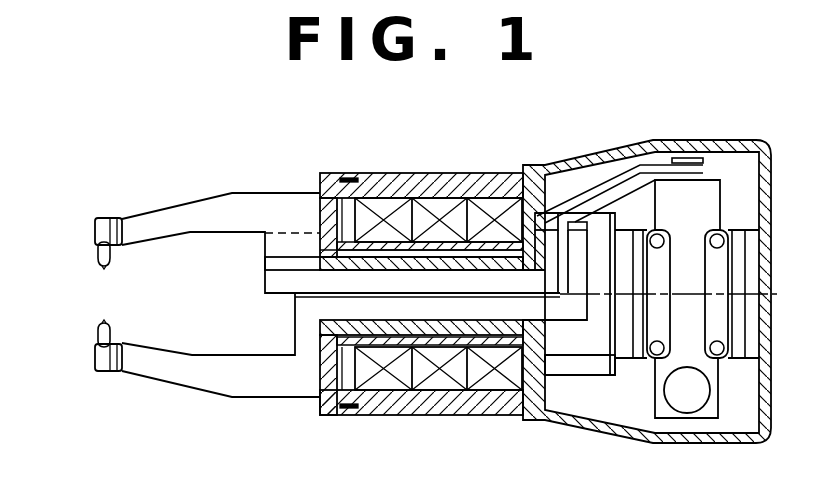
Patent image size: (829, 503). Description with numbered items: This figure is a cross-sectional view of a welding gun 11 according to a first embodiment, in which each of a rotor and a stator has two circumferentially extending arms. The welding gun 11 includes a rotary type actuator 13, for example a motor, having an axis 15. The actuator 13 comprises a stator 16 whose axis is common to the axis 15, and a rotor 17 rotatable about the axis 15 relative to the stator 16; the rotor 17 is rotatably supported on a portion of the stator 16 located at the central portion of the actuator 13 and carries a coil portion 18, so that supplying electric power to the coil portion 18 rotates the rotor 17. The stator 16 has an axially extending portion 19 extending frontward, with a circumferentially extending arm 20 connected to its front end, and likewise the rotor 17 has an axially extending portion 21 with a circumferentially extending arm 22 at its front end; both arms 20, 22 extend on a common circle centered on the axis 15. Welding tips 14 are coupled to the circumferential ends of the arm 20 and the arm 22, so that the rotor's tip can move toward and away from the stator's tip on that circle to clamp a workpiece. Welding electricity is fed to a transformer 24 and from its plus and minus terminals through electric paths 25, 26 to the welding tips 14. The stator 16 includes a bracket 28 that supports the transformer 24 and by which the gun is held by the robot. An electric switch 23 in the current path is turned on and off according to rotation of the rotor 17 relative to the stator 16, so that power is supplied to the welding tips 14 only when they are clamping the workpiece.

The welding gun 11 is at (485, 182).
The rotary type actuator 13 is at (375, 176).
The welding tip 14 is at (104, 266).
The axis 15 is at (243, 296).
The stator 16 is at (393, 263).
The rotor 17 is at (320, 182).
The coil portion 18 is at (438, 205).
The axially extending portion 19 is at (170, 372).
The circumferentially extending arm 20 is at (98, 335).
The axially extending portion 21 is at (173, 213).
The circumferentially extending arm 22 is at (98, 250).
The electric switch 23 is at (265, 263).
The transformer 24 is at (705, 193).
The electric path 25 is at (582, 240).
The electric path 26 is at (543, 240).
The bracket 28 is at (568, 363).